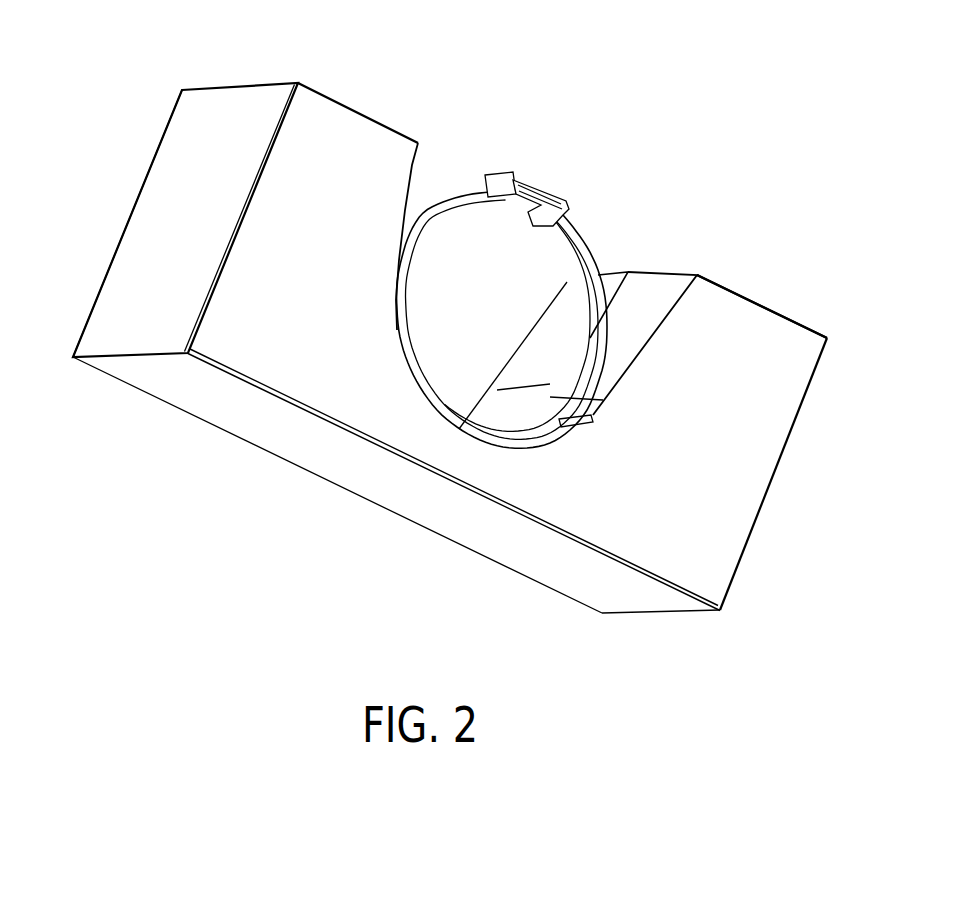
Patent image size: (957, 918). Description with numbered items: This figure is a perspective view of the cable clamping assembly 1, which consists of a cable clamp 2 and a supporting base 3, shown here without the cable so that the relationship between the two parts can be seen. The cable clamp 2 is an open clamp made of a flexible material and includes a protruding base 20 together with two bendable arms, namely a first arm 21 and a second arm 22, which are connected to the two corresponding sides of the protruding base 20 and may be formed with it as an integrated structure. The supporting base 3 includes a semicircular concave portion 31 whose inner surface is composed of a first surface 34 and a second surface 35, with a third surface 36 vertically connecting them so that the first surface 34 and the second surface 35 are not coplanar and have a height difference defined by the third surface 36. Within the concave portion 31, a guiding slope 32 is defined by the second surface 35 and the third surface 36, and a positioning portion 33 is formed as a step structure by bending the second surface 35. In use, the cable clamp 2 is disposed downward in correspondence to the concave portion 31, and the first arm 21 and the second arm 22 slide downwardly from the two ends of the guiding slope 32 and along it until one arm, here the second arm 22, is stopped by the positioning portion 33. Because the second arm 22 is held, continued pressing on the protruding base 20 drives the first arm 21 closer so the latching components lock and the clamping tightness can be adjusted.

The cable clamping assembly 1 is at (936, 99).
The cable clamp 2 is at (536, 383).
The supporting base 3 is at (240, 76).
The protruding base 20 is at (540, 180).
The first arm 21 is at (574, 253).
The second arm 22 is at (458, 188).
The concave portion 31 is at (430, 386).
The guiding slope 32 is at (648, 318).
The positioning portion 33 is at (580, 422).
The first surface 34 is at (537, 347).
The second surface 35 is at (695, 278).
The third surface 36 is at (629, 297).